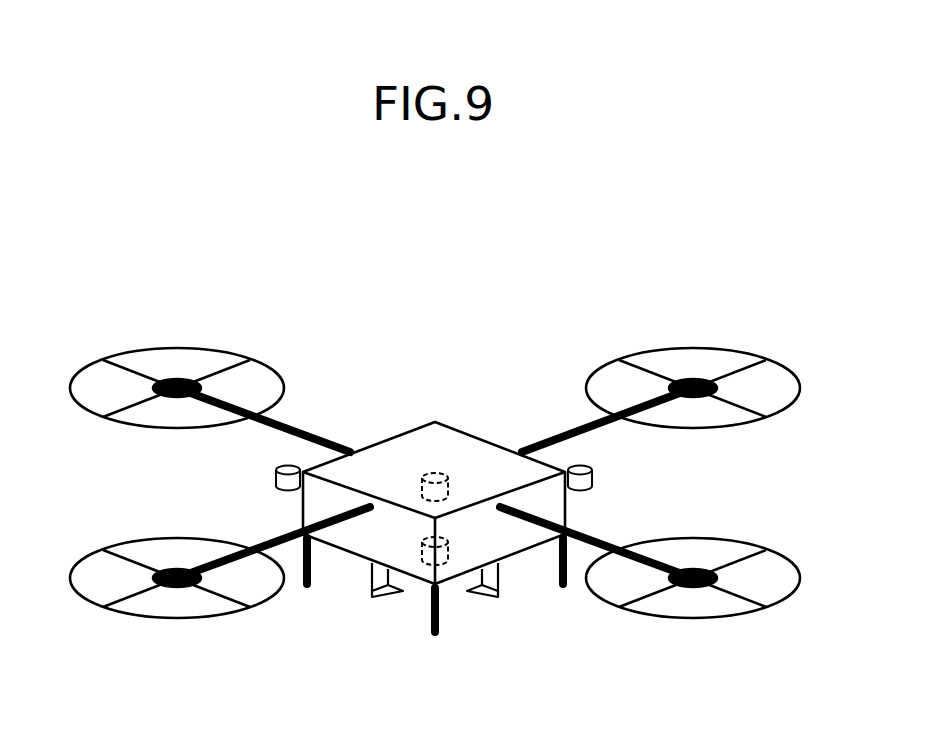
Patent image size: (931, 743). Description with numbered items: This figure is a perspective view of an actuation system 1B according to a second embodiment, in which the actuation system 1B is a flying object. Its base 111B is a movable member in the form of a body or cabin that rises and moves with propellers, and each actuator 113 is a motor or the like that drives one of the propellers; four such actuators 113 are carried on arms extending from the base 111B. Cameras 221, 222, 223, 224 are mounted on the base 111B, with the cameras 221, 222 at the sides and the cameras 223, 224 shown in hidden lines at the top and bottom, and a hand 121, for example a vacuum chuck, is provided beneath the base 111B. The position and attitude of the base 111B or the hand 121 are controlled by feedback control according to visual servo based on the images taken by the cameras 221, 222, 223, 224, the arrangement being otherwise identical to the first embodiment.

The actuation system 1B is at (538, 268).
The actuator 113 is at (177, 380).
The base 111B is at (405, 448).
The camera 221 is at (273, 477).
The camera 222 is at (595, 480).
The camera 223 is at (422, 565).
The camera 224 is at (438, 477).
The hand 121 is at (380, 600).